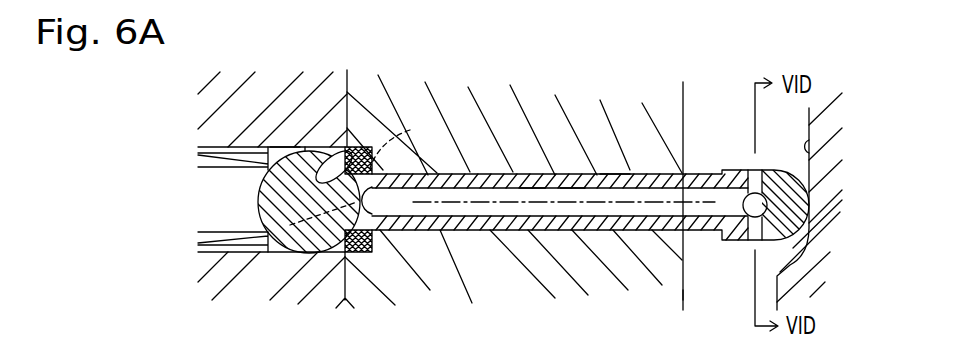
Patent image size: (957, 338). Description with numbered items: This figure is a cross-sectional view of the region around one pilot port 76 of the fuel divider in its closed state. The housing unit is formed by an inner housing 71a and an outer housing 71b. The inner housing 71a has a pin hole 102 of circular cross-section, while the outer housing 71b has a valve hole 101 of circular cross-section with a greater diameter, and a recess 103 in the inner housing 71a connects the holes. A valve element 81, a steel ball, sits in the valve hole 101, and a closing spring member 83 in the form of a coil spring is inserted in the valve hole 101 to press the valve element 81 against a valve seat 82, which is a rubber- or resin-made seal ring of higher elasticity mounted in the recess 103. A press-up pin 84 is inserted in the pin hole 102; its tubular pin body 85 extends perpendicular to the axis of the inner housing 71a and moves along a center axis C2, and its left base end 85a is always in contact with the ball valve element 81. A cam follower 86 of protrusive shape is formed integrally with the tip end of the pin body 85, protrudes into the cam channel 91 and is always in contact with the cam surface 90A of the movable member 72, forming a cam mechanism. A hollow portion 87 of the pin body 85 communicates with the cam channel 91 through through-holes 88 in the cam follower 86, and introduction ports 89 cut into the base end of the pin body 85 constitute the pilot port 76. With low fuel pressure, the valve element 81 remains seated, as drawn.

The inner housing 71a is at (482, 280).
The outer housing 71b is at (280, 278).
The movable member 72 is at (827, 220).
The pilot port 76 is at (346, 26).
The valve element 81 is at (305, 167).
The valve seat 82 is at (372, 147).
The closing spring member 83 is at (223, 166).
The press-up pin 84 is at (615, 174).
The pin body 85 is at (530, 192).
The base end 85a is at (302, 245).
The cam follower 86 is at (742, 170).
The hollow portion 87 is at (530, 192).
The through-holes 88 is at (750, 168).
The introduction ports 89 is at (347, 90).
The cam surface 90A is at (815, 152).
The cam channel 91 is at (738, 285).
The valve hole 101 is at (286, 147).
The pin hole 102 is at (572, 188).
The recess 103 is at (377, 160).
The center axis C2 is at (603, 205).